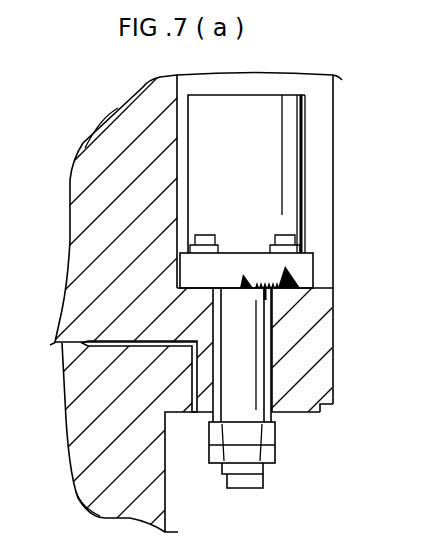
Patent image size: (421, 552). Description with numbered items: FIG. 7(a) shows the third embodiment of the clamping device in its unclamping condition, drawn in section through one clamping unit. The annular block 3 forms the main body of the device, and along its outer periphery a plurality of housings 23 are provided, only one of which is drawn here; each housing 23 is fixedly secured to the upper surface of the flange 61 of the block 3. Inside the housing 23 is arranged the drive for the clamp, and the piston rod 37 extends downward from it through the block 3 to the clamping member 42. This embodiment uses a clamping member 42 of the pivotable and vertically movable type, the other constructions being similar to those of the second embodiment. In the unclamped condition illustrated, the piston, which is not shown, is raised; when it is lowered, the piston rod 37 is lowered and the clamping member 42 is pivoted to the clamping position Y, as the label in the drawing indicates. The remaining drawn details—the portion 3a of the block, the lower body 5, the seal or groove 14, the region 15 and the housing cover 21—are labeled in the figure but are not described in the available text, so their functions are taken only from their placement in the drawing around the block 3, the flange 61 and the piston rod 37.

The annular block 3 is at (100, 187).
The stepped portion of body 3a is at (305, 413).
The base 5 is at (82, 426).
The seal groove 14 is at (170, 352).
The boss portion 15 is at (163, 383).
The housing 21 is at (312, 198).
The housing 23 is at (292, 143).
The piston rod 37 is at (255, 323).
The clamping member 42 is at (275, 430).
The flange 61 is at (318, 345).